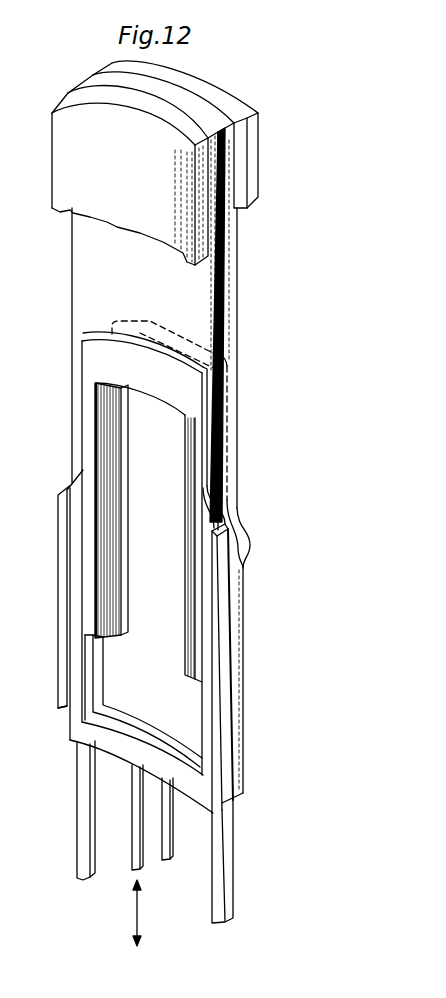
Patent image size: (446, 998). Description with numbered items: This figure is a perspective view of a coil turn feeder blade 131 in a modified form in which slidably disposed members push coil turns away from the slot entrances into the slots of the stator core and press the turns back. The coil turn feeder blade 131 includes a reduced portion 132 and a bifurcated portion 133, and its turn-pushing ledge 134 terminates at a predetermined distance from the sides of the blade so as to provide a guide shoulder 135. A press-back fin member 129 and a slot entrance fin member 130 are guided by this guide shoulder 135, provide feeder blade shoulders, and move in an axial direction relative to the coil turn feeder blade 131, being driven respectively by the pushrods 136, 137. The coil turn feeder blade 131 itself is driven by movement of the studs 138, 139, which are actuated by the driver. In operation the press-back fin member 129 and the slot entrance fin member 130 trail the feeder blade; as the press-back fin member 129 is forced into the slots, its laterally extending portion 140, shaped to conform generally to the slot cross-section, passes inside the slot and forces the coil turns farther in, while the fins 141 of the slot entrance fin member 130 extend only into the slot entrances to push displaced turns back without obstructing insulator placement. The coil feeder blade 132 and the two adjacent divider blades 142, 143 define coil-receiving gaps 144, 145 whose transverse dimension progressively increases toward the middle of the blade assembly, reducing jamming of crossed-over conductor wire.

The press-back fin member 129 is at (226, 576).
The slot entrance fin member 130 is at (243, 615).
The coil turn feeder blade 131 is at (212, 81).
The reduced portion 132 is at (228, 247).
The bifurcated portion 133 is at (120, 540).
The turn-pushing ledge 134 is at (138, 342).
The guide shoulder 135 is at (207, 433).
The pushrod 136 is at (135, 858).
The pushrod 137 is at (165, 857).
The stud 138 is at (83, 855).
The stud 139 is at (225, 888).
The laterally extending portion 140 is at (213, 667).
The fins 141 is at (249, 543).
The divider blade 142 is at (203, 173).
The divider blade 143 is at (252, 137).
The coil-receiving gap 144 is at (150, 107).
The coil-receiving gap 145 is at (207, 107).